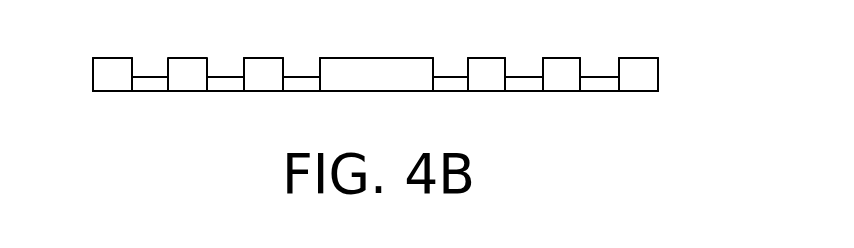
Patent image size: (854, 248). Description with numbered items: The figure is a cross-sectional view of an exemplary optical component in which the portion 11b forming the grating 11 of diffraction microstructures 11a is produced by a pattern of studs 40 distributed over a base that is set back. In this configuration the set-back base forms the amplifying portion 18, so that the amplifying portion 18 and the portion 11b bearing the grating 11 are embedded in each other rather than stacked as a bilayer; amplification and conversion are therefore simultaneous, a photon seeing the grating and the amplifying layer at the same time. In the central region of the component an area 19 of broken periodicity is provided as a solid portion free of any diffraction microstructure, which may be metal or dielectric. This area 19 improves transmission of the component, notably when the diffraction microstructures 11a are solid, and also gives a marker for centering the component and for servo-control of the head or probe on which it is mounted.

The grating 11 is at (610, 42).
The diffraction microstructures 11a is at (112, 63).
The portion forming the grating 11b is at (650, 65).
The amplifying portion 18 is at (598, 88).
The area of broken periodicity 19 is at (380, 65).
The studs 40 is at (262, 62).